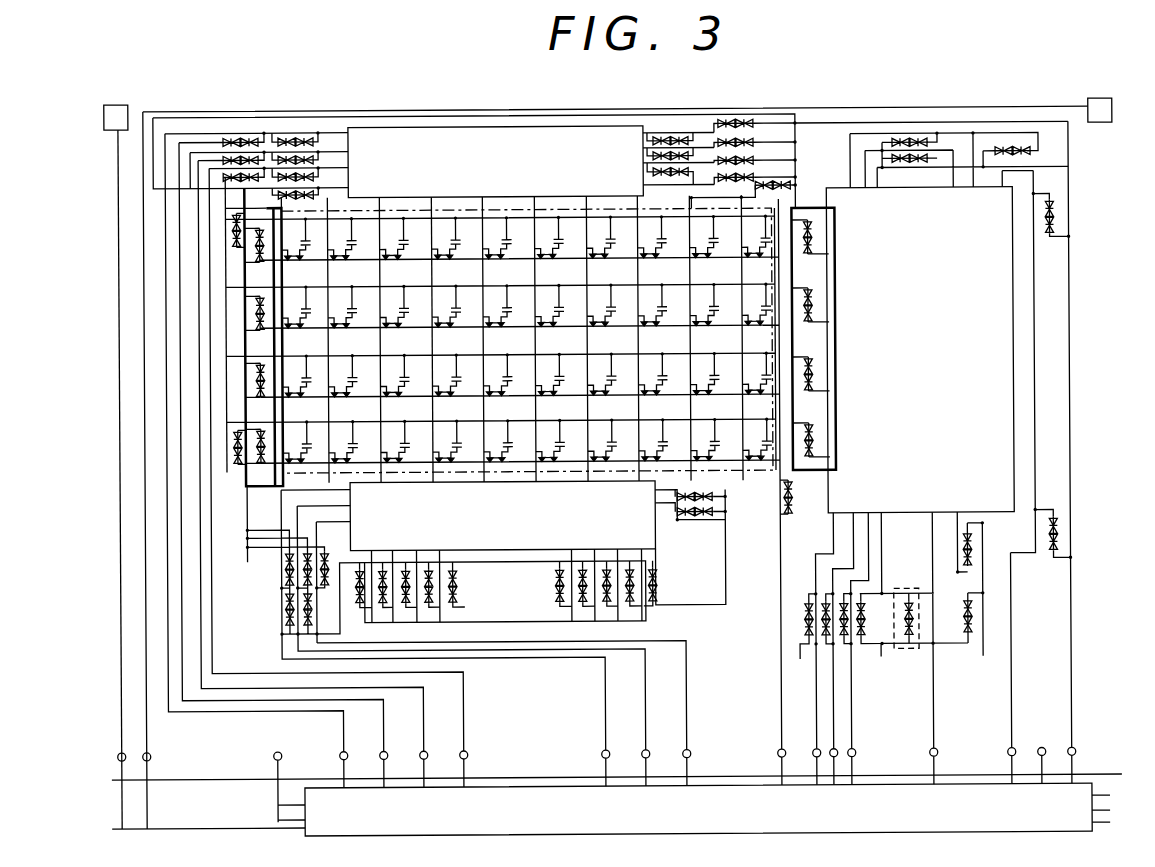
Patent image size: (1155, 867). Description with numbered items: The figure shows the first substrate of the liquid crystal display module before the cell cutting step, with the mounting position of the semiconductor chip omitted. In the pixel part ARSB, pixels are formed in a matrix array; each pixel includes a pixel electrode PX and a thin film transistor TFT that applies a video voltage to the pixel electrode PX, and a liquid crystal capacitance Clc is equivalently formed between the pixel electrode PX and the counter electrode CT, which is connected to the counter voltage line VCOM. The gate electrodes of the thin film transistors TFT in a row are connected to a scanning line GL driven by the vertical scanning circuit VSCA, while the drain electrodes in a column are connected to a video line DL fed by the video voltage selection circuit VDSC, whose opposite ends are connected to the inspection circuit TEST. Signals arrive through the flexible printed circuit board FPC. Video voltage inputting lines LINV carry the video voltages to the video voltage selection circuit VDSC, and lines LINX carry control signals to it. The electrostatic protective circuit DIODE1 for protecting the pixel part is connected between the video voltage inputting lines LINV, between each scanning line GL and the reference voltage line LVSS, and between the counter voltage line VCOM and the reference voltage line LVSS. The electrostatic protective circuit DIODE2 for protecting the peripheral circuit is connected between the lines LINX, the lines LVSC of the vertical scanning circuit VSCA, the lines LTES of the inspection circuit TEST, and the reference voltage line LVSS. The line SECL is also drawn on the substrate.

The inspection circuit TEST is at (495, 162).
The video voltage selection circuit VDSC is at (502, 516).
The vertical scanning circuit VSCA is at (920, 350).
The flexible printed circuit board FPC is at (707, 809).
The thin film transistor TFT is at (438, 262).
The pixel electrode PX is at (507, 257).
The line connected to the inspection circuit LTES is at (687, 190).
The liquid crystal capacitance Clc is at (357, 318).
The video line DL is at (431, 342).
The scanning line GL is at (478, 330).
The counter electrode CT is at (530, 354).
The pixel part ARSB is at (767, 472).
The counter voltage line VCOM is at (782, 575).
The video voltage inputting line LINV is at (643, 606).
The line other than the video voltage inputting line LINX is at (687, 666).
The electrostatic protective circuit for protecting the pixel part DIODE1 is at (822, 468).
The electrostatic protective circuit for protecting the peripheral circuit DIODE2 is at (903, 650).
The line connected to the vertical scanning circuit LVSC is at (1037, 458).
The reference voltage line LVSS is at (1070, 630).
The static electricity countermeasure line SECL is at (163, 780).